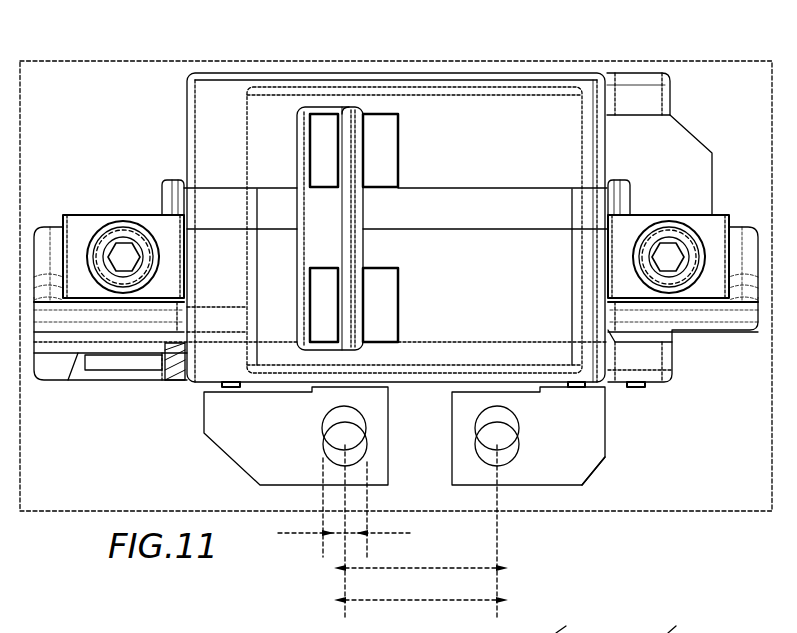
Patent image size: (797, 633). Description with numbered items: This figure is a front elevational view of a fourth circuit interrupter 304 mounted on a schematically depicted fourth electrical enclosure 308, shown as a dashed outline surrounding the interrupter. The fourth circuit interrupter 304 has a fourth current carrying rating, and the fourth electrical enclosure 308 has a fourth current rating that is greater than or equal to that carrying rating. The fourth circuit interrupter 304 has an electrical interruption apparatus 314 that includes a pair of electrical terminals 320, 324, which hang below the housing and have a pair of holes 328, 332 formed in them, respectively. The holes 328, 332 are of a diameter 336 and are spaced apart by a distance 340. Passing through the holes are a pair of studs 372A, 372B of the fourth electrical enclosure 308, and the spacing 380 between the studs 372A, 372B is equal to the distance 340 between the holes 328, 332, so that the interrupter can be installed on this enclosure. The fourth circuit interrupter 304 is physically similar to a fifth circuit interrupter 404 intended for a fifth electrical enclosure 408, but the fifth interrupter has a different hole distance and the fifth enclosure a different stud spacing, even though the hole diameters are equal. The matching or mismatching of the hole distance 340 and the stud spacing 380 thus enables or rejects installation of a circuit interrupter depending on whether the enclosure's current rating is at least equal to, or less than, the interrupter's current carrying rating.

The fourth electrical enclosure 308 is at (459, 58).
The fourth circuit interrupter 304 is at (578, 69).
The electrical terminal 320 is at (272, 493).
The electrical terminal 324 is at (606, 425).
The hole 328 is at (331, 417).
The hole 332 is at (516, 419).
The stud 372A is at (323, 433).
The stud 372B is at (519, 429).
The electrical interruption apparatus 314 is at (603, 470).
The diameter 336 is at (335, 537).
The spacing 380 is at (430, 570).
The distance 340 is at (430, 602).
The fifth circuit interrupter 404 is at (561, 630).
The fifth electrical enclosure 408 is at (672, 632).